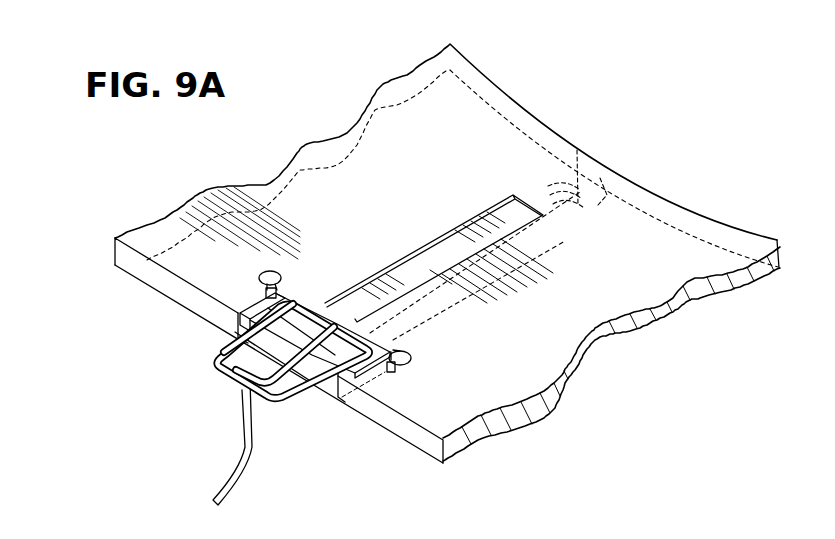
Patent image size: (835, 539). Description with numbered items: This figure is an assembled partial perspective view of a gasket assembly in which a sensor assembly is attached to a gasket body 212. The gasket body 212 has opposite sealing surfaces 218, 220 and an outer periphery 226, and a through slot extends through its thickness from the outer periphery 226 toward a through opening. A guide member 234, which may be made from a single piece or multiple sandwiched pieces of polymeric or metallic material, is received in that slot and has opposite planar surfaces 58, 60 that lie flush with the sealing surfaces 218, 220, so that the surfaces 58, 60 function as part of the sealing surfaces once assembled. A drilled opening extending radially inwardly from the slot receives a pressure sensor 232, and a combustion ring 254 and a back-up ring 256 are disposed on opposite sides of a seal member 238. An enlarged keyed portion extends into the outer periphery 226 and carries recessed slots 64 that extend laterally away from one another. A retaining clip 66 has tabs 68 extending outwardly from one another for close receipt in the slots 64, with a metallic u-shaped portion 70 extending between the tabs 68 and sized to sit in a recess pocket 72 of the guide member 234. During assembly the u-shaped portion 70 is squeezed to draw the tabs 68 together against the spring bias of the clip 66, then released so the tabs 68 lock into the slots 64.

The planar surface 58 is at (427, 257).
The planar surface 60 is at (441, 295).
The slots 64 is at (283, 273).
The retaining clip 66 is at (307, 397).
The tabs 68 is at (267, 297).
The u-shaped portion 70 is at (223, 378).
The recess pocket 72 is at (328, 358).
The gasket body 212 is at (567, 249).
The sealing surface 218 is at (658, 237).
The sealing surface 220 is at (707, 303).
The outer periphery 226 is at (397, 427).
The pressure sensor 232 is at (607, 177).
The guide member 234 is at (523, 255).
The seal member 238 is at (553, 188).
The combustion ring 254 is at (577, 150).
The back-up ring 256 is at (553, 191).